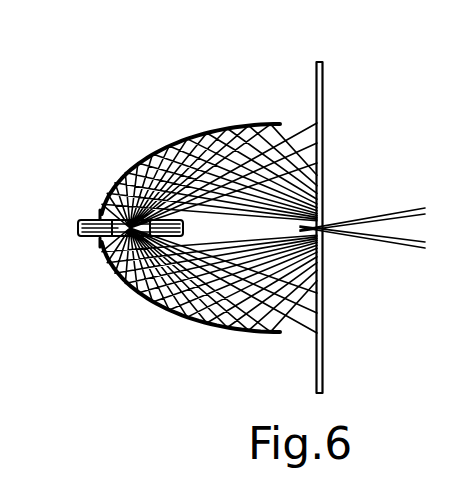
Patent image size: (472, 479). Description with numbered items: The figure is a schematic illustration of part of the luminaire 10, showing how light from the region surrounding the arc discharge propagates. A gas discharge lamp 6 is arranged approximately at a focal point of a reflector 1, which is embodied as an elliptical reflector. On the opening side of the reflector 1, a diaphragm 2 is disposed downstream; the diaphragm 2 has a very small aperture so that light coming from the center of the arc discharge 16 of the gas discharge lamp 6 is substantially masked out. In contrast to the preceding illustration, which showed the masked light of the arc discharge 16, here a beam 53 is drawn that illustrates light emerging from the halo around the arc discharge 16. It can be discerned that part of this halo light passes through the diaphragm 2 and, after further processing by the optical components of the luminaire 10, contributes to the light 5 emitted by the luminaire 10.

The luminaire 10 is at (148, 114).
The reflector 1 is at (269, 334).
The arc discharge 16 is at (103, 216).
The gas discharge lamp 6 is at (98, 245).
The beam 53 is at (288, 130).
The diaphragm 2 is at (324, 144).
The light emitted by the luminaire 5 is at (417, 258).